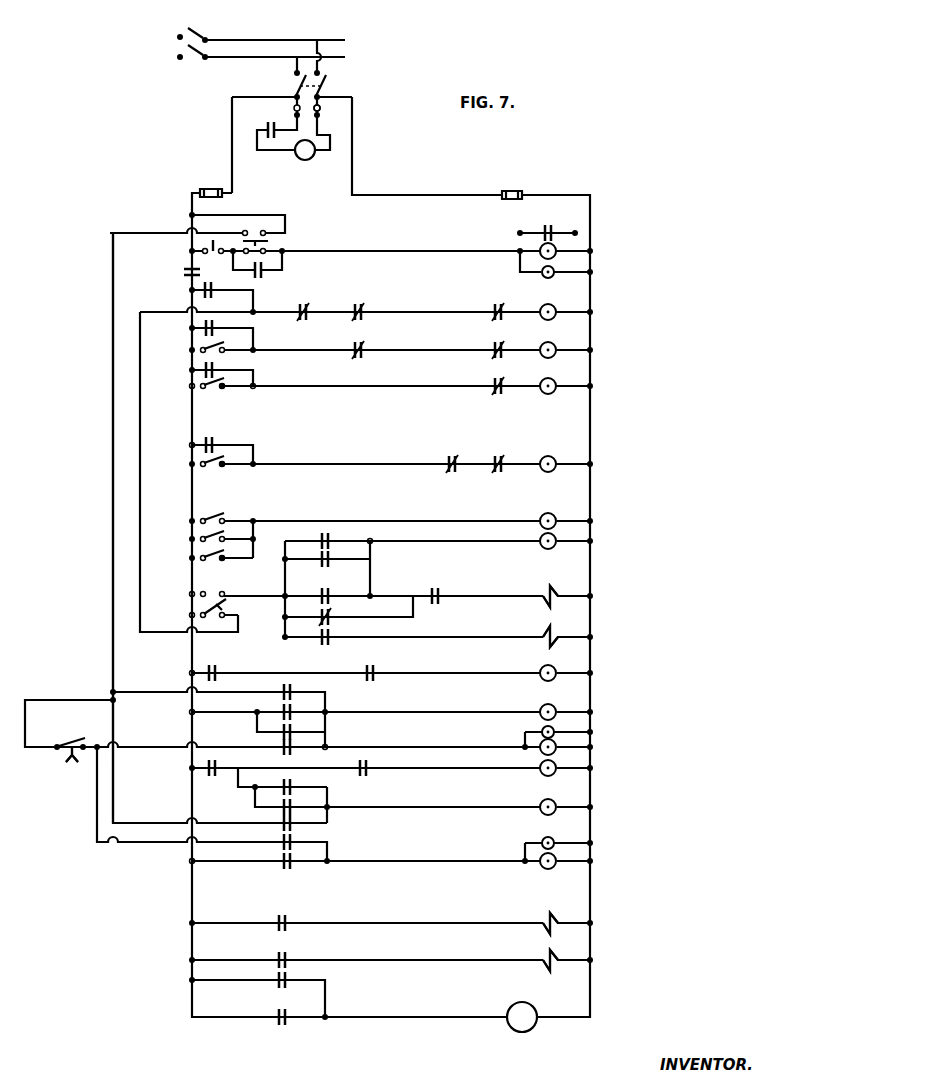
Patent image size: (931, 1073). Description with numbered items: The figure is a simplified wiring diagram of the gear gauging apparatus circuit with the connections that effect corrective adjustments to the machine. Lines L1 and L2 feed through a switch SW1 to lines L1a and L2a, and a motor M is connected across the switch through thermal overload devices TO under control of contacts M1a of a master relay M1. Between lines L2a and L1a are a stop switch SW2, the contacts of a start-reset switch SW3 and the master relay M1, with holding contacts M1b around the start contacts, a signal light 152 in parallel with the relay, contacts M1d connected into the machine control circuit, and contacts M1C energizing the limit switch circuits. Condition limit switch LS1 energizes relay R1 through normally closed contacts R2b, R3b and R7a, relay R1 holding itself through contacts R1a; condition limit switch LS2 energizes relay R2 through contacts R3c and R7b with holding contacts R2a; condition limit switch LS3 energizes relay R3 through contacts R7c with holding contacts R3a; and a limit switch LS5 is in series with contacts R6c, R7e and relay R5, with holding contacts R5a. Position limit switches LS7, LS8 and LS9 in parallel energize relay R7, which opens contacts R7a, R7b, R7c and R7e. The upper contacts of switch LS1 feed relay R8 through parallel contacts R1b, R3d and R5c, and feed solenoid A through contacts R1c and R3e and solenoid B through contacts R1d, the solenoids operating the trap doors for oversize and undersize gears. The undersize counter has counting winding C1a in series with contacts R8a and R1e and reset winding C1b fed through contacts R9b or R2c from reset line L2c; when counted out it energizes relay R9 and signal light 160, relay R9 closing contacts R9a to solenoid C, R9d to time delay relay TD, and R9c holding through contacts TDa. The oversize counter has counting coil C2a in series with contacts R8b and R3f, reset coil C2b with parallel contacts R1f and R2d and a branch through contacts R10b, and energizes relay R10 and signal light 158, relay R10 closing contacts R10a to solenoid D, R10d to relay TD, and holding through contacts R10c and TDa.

The line L1 is at (266, 33).
The line L2 is at (266, 62).
The switch SW1 is at (329, 88).
The thermal overload devices TO is at (323, 106).
The contacts M1a is at (267, 127).
The motor M is at (311, 157).
The line L2a is at (186, 207).
The line L1a is at (592, 205).
The start-reset switch SW3 is at (263, 226).
The stop switch SW2 is at (188, 248).
The contacts M1d is at (553, 228).
The master relay M1 is at (558, 247).
The signal light 152 is at (550, 277).
The contacts M1b is at (262, 276).
The contacts M1C is at (184, 269).
The contacts R1a is at (190, 290).
The contacts R2b is at (298, 306).
The contacts R3b is at (355, 302).
The contacts R7a is at (498, 310).
The relay R1 is at (556, 307).
The contacts R2a is at (190, 328).
The condition limit switch LS2 is at (190, 350).
The contacts R3c is at (355, 344).
The contacts R7b is at (498, 349).
The relay R2 is at (555, 345).
The contacts R3a is at (190, 370).
The condition limit switch LS3 is at (190, 386).
The contacts R7c is at (491, 387).
The relay R3 is at (555, 381).
The contacts R5a is at (190, 445).
The limit switch LS5 is at (190, 464).
The contacts R6c is at (448, 461).
The contacts R7e is at (498, 462).
The relay R5 is at (560, 454).
The reset line L2c is at (113, 510).
The position limit switch LS7 is at (192, 521).
The position limit switch LS8 is at (192, 539).
The position limit switch LS9 is at (192, 558).
The relay R7 is at (556, 517).
The relay R8 is at (546, 549).
The contacts R1b is at (336, 531).
The contacts R3d is at (335, 551).
The contacts R5c is at (341, 592).
The contacts R1c is at (336, 606).
The contacts R1d is at (336, 627).
The contacts R3e is at (442, 586).
The solenoid A is at (546, 592).
The solenoid B is at (539, 643).
The condition limit switch LS1 is at (190, 608).
The contacts R8a is at (220, 662).
The contacts R1e is at (390, 680).
The actuating winding C1a is at (542, 681).
The contacts R9b is at (291, 681).
The contacts R2c is at (302, 707).
The contacts R9c is at (288, 748).
The reset winding C1b is at (558, 708).
The signal light 160 is at (556, 730).
The relay R9 is at (559, 745).
The time delay contacts TDa is at (82, 745).
The contacts R8b is at (220, 758).
The contacts R1f is at (292, 778).
The contacts R3f is at (367, 772).
The counting coil C2a is at (542, 775).
The contacts R2d is at (304, 803).
The contacts R10b is at (283, 822).
The reset coil C2b is at (556, 805).
The contacts R10c is at (292, 842).
The signal light 158 is at (551, 838).
The relay R10 is at (544, 870).
The contacts R9a is at (287, 908).
The solenoid C is at (544, 917).
The contacts R10a is at (287, 946).
The solenoid D is at (547, 955).
The contacts R9d is at (287, 970).
The contacts R10d is at (287, 1006).
The time delay relay TD is at (522, 1017).